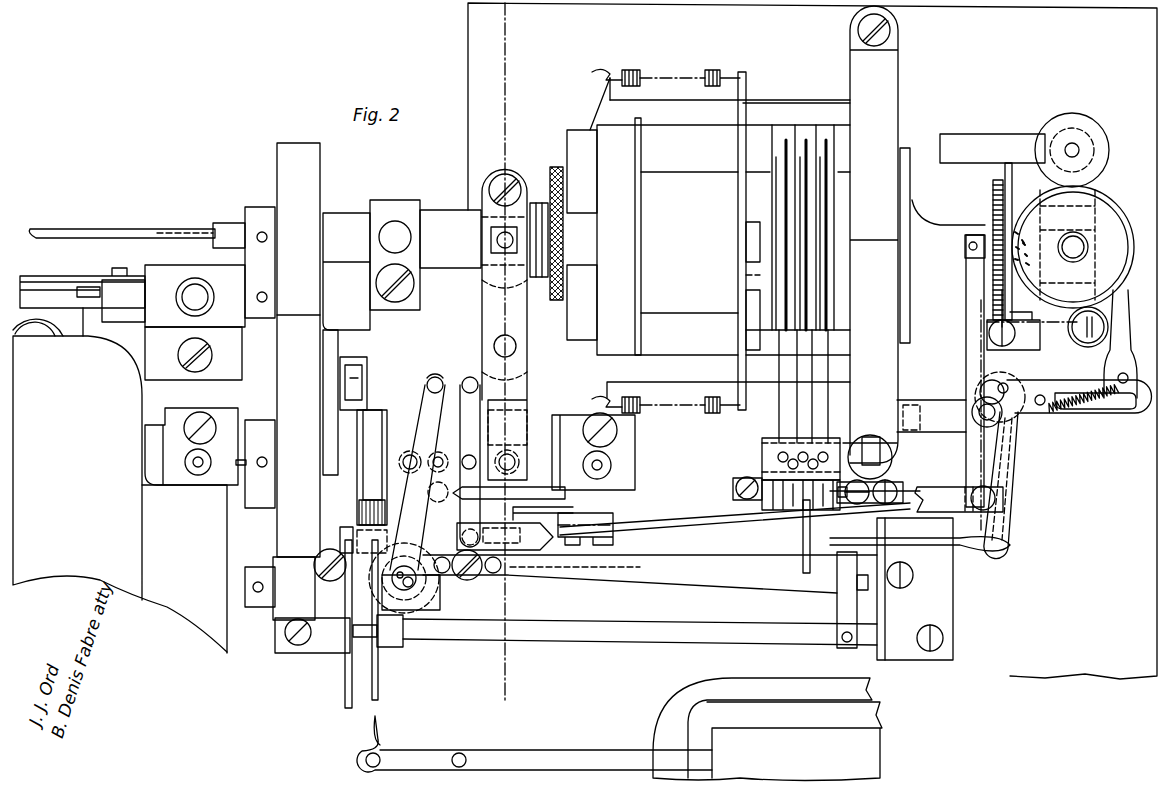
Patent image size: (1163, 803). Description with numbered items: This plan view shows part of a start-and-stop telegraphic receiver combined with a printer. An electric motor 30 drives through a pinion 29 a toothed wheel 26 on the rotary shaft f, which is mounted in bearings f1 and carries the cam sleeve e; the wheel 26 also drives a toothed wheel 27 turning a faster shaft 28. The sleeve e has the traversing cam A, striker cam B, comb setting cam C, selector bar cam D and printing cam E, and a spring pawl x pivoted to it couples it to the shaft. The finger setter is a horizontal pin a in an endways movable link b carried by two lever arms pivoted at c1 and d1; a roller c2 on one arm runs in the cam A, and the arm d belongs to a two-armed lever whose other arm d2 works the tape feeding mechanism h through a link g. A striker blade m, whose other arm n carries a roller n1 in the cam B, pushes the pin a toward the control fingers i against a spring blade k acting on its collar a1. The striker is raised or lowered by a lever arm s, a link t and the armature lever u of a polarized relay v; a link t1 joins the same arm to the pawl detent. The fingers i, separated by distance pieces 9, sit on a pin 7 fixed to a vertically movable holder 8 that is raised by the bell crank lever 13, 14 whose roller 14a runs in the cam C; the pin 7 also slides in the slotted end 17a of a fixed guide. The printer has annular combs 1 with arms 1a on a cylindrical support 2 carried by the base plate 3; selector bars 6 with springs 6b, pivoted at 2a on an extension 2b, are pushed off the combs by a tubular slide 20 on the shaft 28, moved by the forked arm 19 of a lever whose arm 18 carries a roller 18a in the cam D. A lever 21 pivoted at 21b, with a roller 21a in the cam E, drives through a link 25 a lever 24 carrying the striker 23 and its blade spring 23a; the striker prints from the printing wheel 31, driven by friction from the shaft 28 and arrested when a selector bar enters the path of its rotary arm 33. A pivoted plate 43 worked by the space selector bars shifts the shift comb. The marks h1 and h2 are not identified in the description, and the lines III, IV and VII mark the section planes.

The annular combs 1 is at (803, 122).
The horizontal arm 1a is at (790, 418).
The stationary cylindrical support 2 is at (723, 241).
The pivot of selector bars 2a is at (597, 135).
The stationary support or extension of cylinder 2b is at (622, 213).
The frame or base plate 3 is at (942, 575).
The selector bars 6 is at (728, 238).
The selector bar springs 6b is at (672, 420).
The pin 7 is at (865, 503).
The holder 8 is at (762, 480).
The distance pieces 9 is at (1107, 326).
The slotted arm of bell crank lever 13 is at (703, 502).
The unslotted arm of bell crank lever 14 is at (530, 520).
The roller 14a is at (580, 501).
The slotted upper end of fixed guide 17a is at (860, 465).
The lever arm 18 is at (489, 462).
The roller 18a is at (515, 462).
The forked arm 19 is at (504, 325).
The tubular flanged slide 20 is at (553, 173).
The lever 21 is at (413, 392).
The roller 21a is at (433, 463).
The pivot of lever 21b is at (437, 380).
The striker 23 is at (990, 240).
The flat blade spring 23a is at (948, 249).
The lever 24 is at (973, 305).
The link 25 is at (959, 490).
The toothed wheel 26 is at (310, 402).
The toothed wheel 27 is at (298, 350).
The shaft 28 is at (230, 216).
The pinion 29 is at (311, 605).
The electric motor 30 is at (120, 480).
The rotary printing wheel 31 is at (993, 190).
The rotary arm 33 is at (905, 158).
The pivoted plate 43 is at (767, 268).
The horizontal pin a is at (838, 515).
The collar a1 is at (805, 530).
The link b is at (660, 540).
The pivot of lever arm c1 is at (469, 380).
The roller c2 is at (551, 377).
The comb setting cam C is at (460, 392).
The traversing cam A is at (447, 433).
The striker cam B is at (413, 441).
The selector bar cam D is at (509, 505).
The printing cam E is at (434, 519).
The lever arm d is at (1015, 460).
The pivot of lever arm d1 is at (1002, 388).
The second arm of two armed lever d2 is at (1021, 408).
The cam sleeve e is at (405, 425).
The rotary shaft f is at (160, 455).
The bearings f1 is at (205, 462).
The link g is at (1120, 344).
The tape feeding mechanism h is at (1047, 120).
The mark h1 is at (350, 438).
The mark h2 is at (323, 438).
The control fingers i is at (780, 468).
The spring blade k is at (715, 535).
The striker spring blade m is at (640, 603).
The bell crank lever arm n is at (407, 493).
The roller n1 is at (408, 452).
The lever arm s is at (402, 640).
The link t is at (358, 680).
The link t1 is at (353, 563).
The armature lever u is at (553, 752).
The polarized relay v is at (767, 729).
The spring pawl x is at (357, 517).
The section line III— III is at (780, 612).
The section line IV— IV is at (385, 700).
The section line VII— VII is at (122, 222).